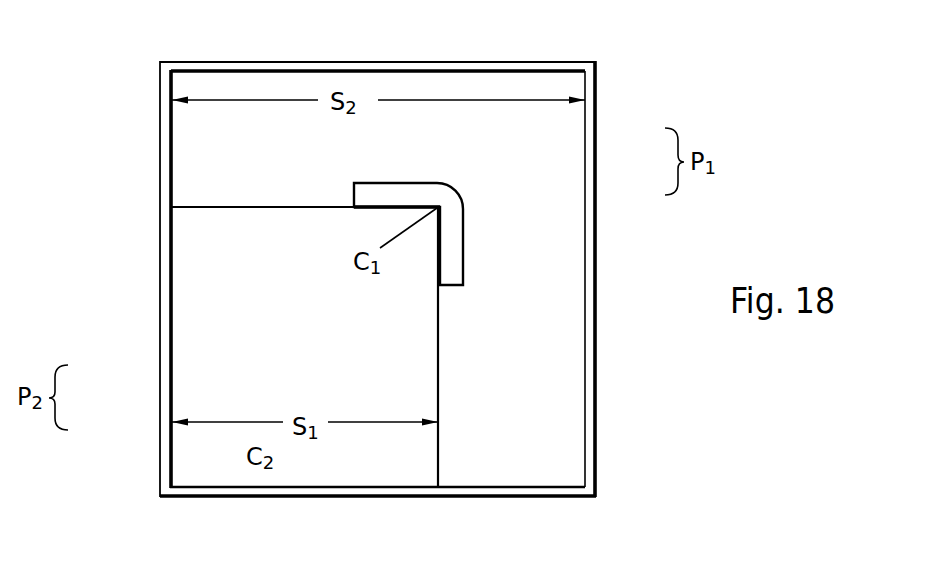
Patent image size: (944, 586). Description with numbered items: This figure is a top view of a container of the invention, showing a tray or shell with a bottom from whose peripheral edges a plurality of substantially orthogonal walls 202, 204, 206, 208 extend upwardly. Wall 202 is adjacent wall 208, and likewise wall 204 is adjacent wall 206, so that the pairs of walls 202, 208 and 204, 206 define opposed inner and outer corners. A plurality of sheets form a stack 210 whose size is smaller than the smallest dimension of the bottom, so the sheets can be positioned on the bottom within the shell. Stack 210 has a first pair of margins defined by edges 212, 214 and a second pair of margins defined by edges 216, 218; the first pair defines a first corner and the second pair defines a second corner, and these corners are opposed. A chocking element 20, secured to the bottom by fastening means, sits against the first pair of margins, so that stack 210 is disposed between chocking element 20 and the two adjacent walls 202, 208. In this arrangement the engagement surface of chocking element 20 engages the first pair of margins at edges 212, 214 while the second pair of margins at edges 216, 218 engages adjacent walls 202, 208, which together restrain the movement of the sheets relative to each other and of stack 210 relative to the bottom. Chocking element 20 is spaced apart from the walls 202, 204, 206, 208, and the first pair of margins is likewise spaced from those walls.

The chocking element 20 is at (463, 222).
The wall 202 is at (266, 498).
The wall 204 is at (595, 410).
The wall 206 is at (487, 62).
The wall 208 is at (160, 310).
The stack 210 is at (215, 258).
The edge 212 is at (465, 173).
The edge 214 is at (438, 340).
The edge 216 is at (331, 478).
The edge 218 is at (170, 366).